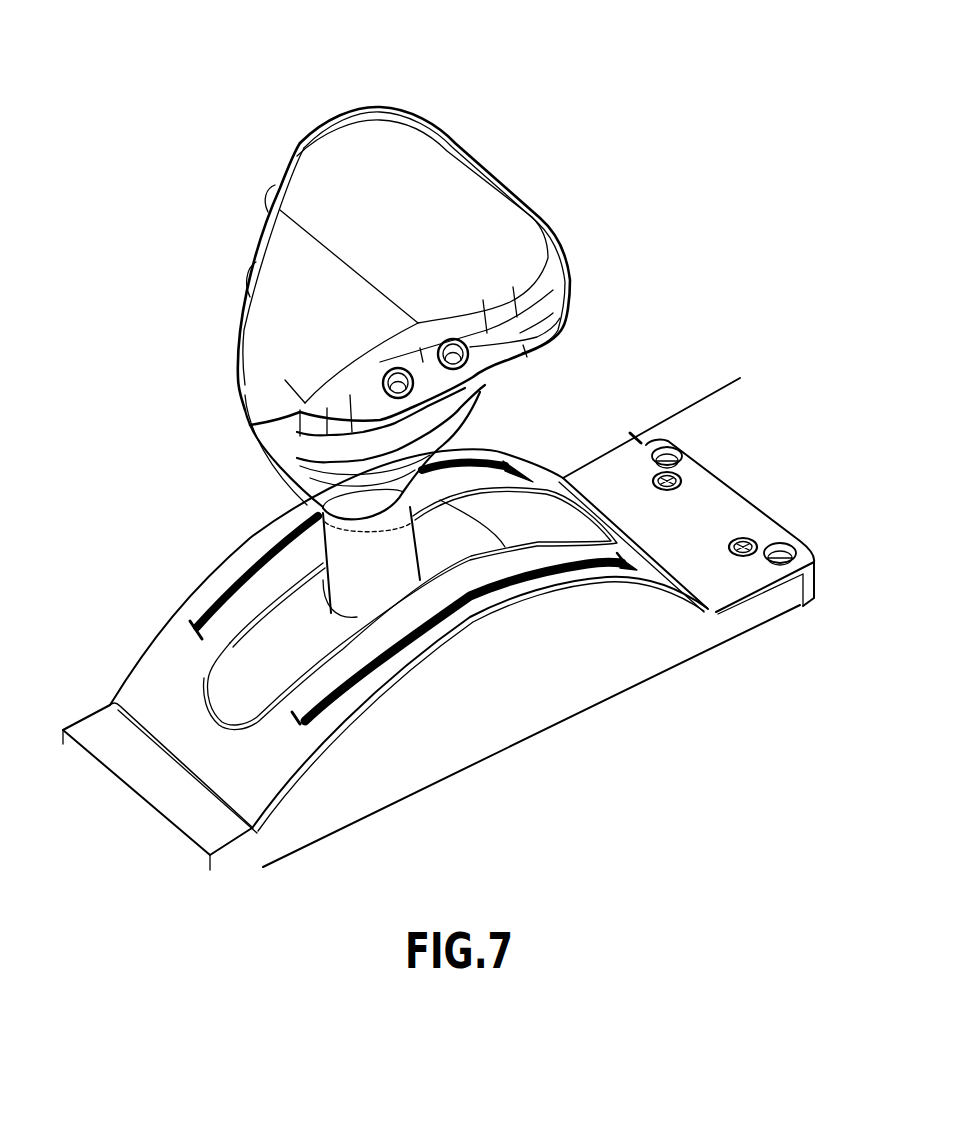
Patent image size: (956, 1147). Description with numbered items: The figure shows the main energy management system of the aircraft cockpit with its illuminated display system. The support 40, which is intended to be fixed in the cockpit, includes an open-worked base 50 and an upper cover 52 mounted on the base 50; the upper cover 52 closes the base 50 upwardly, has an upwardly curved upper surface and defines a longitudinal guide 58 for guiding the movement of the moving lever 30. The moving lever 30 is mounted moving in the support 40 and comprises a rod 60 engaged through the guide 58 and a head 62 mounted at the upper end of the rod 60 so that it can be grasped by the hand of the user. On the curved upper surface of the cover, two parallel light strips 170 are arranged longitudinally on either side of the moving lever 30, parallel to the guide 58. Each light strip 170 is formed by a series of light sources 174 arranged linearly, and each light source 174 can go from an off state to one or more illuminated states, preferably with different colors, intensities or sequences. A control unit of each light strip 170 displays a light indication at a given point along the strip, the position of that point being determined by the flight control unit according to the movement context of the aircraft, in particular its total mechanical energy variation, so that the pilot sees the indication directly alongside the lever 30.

The moving lever 30 is at (468, 103).
The head 62 is at (320, 173).
The rod 60 is at (377, 583).
The support 40 is at (655, 697).
The base 50 is at (707, 413).
The upper cover 52 is at (628, 473).
The longitudinal guide 58 is at (535, 527).
The light strip 170 is at (192, 643).
The light source 174 is at (553, 582).